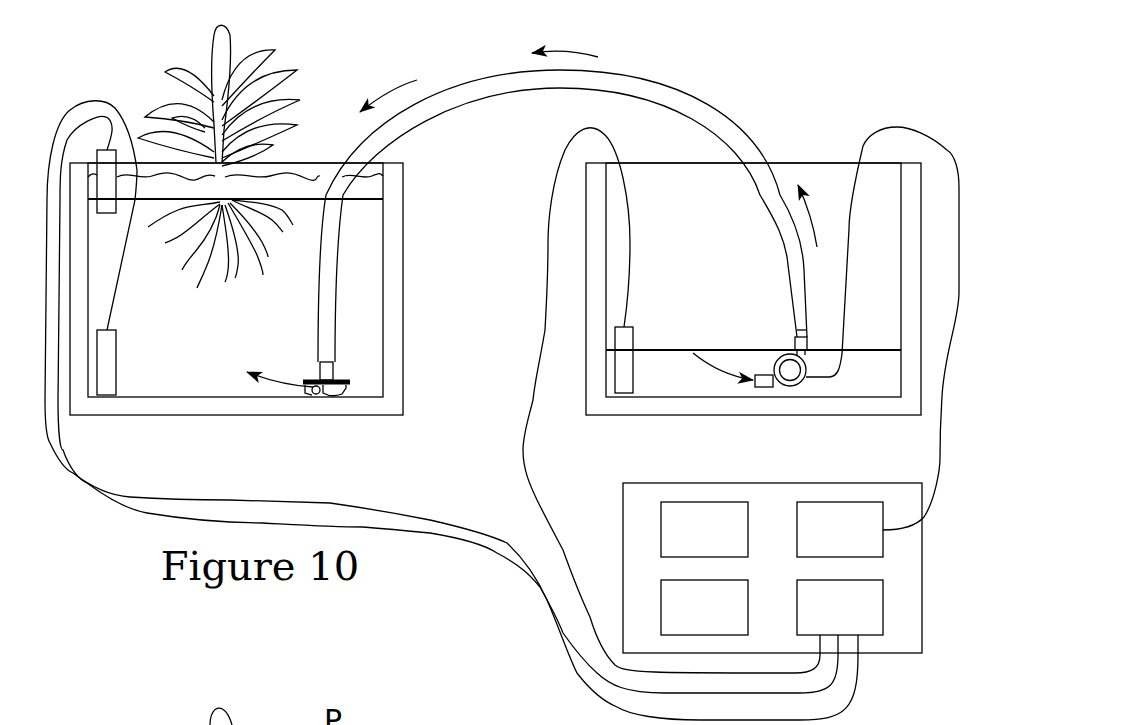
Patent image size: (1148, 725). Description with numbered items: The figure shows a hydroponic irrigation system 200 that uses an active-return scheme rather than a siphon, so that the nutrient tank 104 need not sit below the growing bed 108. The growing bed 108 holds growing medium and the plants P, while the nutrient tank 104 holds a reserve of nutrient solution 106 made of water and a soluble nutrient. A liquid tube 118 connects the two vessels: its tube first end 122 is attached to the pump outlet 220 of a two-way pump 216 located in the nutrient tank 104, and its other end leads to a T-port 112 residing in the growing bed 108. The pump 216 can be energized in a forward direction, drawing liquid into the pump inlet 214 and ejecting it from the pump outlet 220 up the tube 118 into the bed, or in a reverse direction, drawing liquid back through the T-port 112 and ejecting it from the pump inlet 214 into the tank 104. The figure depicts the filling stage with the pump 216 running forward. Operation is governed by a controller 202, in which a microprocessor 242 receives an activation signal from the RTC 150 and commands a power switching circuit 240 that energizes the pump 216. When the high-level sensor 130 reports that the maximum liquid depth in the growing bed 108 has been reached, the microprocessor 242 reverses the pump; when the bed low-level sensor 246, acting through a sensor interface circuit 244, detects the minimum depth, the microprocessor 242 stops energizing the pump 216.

The hydroponic irrigation system 200 is at (728, 72).
The plants P is at (283, 67).
The growing bed 108 is at (398, 277).
The nutrient tank 104 is at (618, 412).
The nutrient solution 106 is at (687, 348).
The liquid tube 118 is at (745, 112).
The T-port 112 is at (320, 395).
The two-way pump 216 is at (807, 382).
The pump inlet 214 is at (763, 387).
The pump outlet 220 is at (797, 345).
The tube first end 122 is at (795, 332).
The high-level sensor 130 is at (108, 160).
The bed low-level sensor 246 is at (108, 372).
The controller 202 is at (791, 426).
The microprocessor 242 is at (704, 529).
The power switching circuit 240 is at (878, 342).
The RTC 150 is at (704, 607).
The sensor interface circuit 244 is at (840, 607).